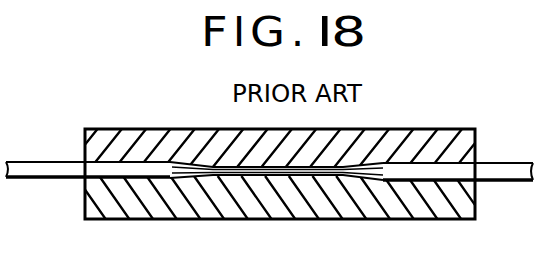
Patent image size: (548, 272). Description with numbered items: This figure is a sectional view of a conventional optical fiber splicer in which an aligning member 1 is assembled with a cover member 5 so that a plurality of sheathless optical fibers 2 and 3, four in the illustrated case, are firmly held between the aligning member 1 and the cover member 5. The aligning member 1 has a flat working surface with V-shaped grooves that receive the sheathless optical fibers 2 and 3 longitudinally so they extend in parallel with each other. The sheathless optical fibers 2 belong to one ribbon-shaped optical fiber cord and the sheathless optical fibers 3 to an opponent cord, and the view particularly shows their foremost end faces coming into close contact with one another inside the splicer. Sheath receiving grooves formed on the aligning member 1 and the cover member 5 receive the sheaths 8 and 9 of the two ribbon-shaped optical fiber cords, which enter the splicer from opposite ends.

The aligning member 1 is at (450, 207).
The sheathless optical fiber 2 is at (247, 175).
The sheathless optical fiber 3 is at (328, 175).
The cover member 5 is at (430, 136).
The sheath 8 is at (33, 168).
The sheath 9 is at (505, 165).